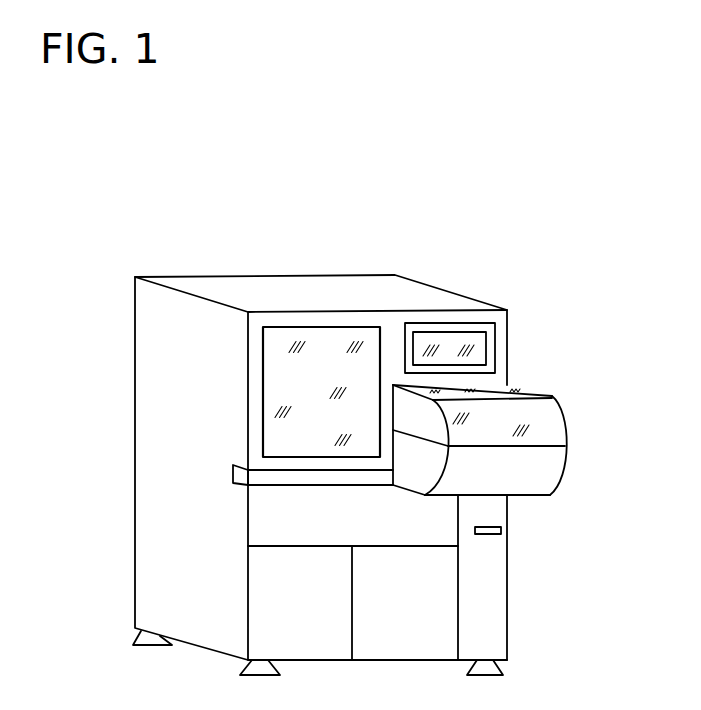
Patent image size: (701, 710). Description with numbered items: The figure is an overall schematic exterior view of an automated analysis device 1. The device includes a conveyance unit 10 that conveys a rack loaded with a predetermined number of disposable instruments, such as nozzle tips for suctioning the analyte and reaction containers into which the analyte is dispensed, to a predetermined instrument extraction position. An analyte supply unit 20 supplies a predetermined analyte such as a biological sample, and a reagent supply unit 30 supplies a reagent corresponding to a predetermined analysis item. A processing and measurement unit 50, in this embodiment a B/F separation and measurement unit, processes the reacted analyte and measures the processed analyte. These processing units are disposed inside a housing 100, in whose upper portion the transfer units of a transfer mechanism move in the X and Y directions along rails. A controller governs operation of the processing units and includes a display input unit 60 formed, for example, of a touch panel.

The automated analysis device 1 is at (484, 211).
The conveyance unit 10 is at (511, 544).
The analyte supply unit 20 is at (540, 425).
The reagent supply unit 30 is at (227, 453).
The processing and measurement unit 50 is at (242, 284).
The display input unit 60 is at (410, 352).
The housing 100 is at (187, 538).